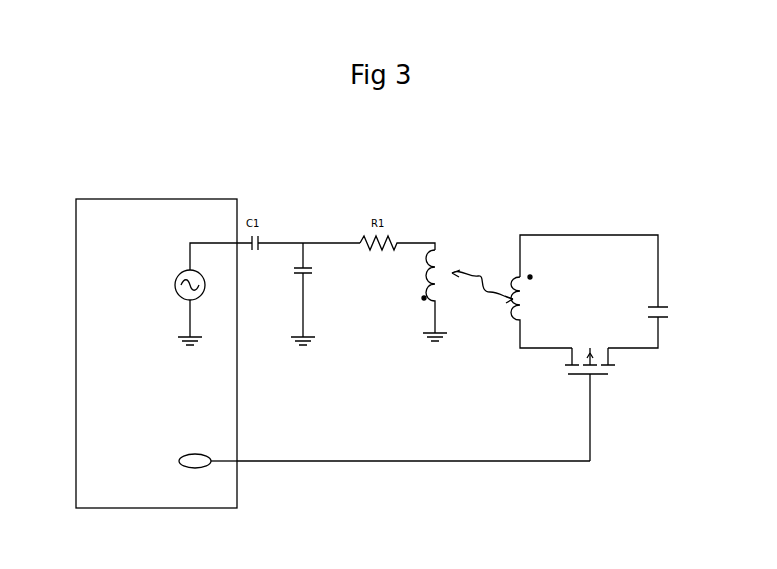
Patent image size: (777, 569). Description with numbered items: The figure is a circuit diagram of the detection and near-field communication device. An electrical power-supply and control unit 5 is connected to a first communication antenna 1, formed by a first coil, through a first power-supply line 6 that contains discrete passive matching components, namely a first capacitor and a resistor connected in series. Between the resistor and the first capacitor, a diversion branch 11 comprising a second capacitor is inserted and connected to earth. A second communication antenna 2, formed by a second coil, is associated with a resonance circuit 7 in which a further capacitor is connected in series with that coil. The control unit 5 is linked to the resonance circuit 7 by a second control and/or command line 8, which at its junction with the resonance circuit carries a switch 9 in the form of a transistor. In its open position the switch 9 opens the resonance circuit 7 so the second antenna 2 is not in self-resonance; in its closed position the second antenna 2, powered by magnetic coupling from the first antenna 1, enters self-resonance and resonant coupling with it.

The first near-field communication antenna 1 is at (438, 285).
The second communication antenna 2 is at (520, 288).
The electrical power-supply and control unit 5 is at (95, 470).
The first power-supply line 6 is at (282, 243).
The resonance circuit 7 is at (581, 236).
The second control and/or command line 8 is at (467, 461).
The switch 9 is at (600, 374).
The diversion branch 11 is at (303, 305).